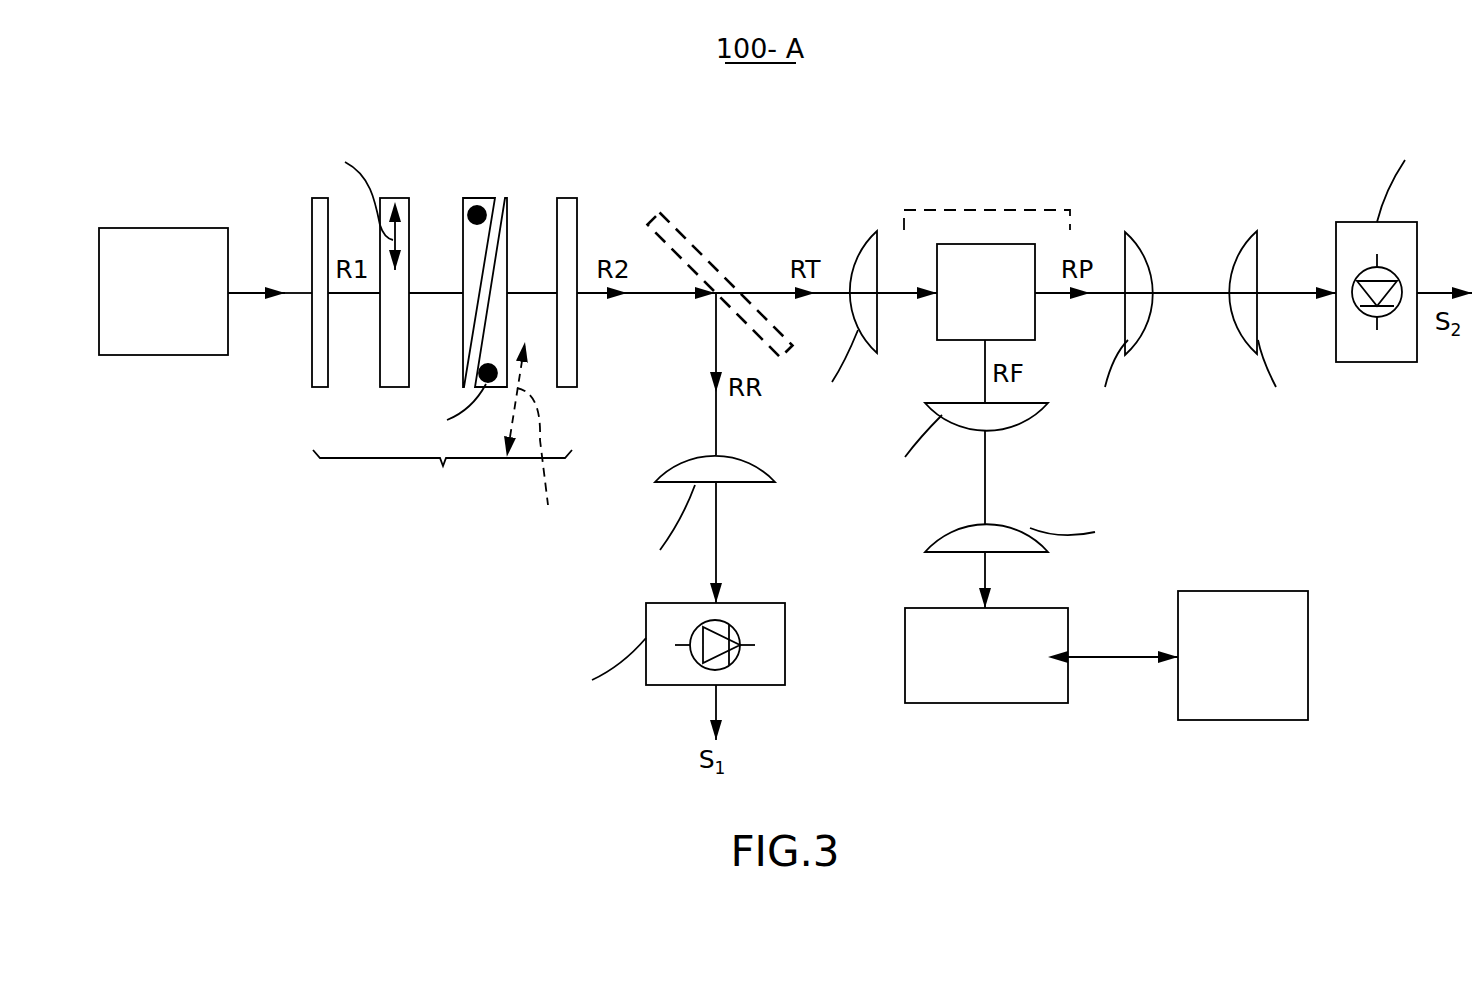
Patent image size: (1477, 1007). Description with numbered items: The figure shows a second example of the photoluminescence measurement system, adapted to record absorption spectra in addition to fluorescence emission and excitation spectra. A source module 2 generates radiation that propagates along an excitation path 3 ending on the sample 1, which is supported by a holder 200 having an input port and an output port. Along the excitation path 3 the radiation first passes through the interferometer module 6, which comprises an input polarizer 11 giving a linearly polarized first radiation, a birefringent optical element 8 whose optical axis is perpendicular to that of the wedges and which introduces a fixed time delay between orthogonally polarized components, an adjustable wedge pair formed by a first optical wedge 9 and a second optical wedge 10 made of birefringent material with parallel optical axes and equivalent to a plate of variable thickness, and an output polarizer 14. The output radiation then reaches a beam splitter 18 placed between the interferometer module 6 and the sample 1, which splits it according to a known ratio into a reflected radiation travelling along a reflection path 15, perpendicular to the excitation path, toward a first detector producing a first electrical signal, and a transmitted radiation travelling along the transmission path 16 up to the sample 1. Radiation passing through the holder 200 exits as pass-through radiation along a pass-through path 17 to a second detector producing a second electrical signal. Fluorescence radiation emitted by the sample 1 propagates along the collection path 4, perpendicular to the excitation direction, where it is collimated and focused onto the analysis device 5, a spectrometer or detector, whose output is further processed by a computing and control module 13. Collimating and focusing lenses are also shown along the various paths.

The sample 1 is at (978, 244).
The electromagnetic radiation source module 2 is at (125, 357).
The excitation path 3 is at (288, 410).
The collection path 4 is at (1001, 477).
The analysis device 5 is at (905, 620).
The interferometer module 6 is at (397, 462).
The optical element 8 is at (401, 198).
The first optical wedge 9 is at (463, 217).
The second optical wedge 10 is at (503, 247).
The input polarizer 11 is at (312, 238).
The computing and control module 13 is at (1229, 672).
The output polarizer 14 is at (578, 348).
The reflection path 15 is at (735, 503).
The transmission path 16 is at (818, 283).
The pass-through path 17 is at (1245, 295).
The beam splitter 18 is at (694, 240).
The holder 200 is at (1037, 210).